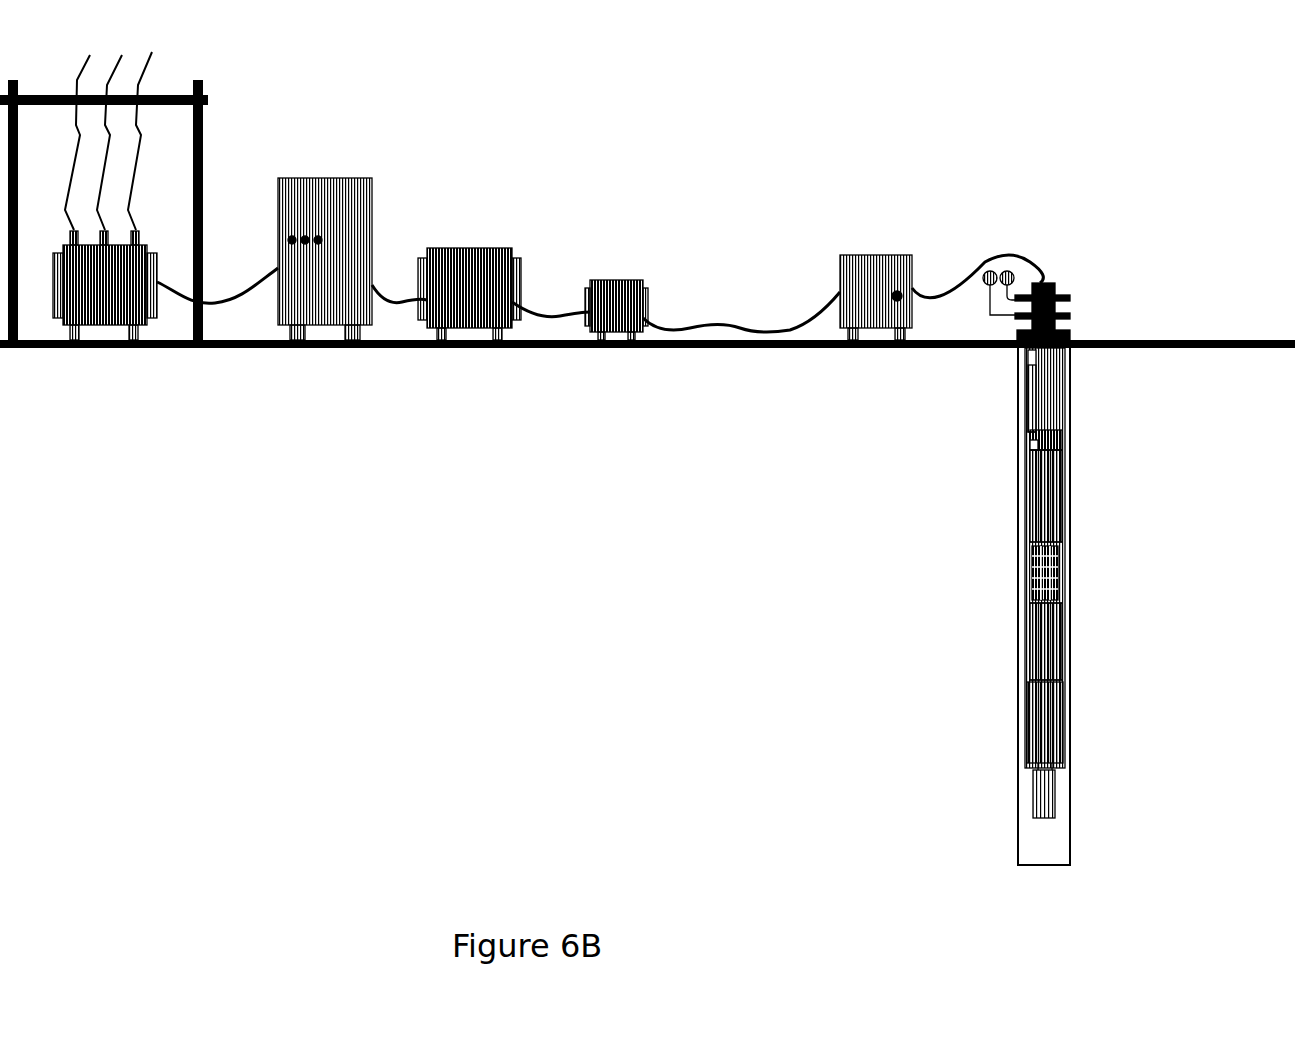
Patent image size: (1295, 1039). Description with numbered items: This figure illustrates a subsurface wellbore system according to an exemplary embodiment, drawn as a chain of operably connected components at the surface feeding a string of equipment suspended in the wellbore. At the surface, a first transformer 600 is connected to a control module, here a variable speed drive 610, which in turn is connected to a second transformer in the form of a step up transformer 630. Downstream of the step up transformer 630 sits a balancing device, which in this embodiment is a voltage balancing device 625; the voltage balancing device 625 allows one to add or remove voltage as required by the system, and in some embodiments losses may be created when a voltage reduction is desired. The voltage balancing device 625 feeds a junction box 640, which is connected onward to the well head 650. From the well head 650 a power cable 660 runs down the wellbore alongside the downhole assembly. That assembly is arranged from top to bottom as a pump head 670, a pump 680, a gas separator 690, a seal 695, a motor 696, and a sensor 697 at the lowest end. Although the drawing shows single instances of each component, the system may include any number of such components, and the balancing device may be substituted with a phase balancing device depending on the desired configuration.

The first transformer 600 is at (148, 208).
The variable speed drive 610 is at (372, 207).
The step up transformer 630 is at (427, 248).
The voltage balancing device 625 is at (614, 280).
The junction box 640 is at (895, 255).
The well head 650 is at (1060, 285).
The power cable 660 is at (1027, 404).
The pump head 670 is at (1070, 437).
The pump 680 is at (1070, 492).
The gas separator 690 is at (1070, 572).
The seal 695 is at (1070, 645).
The motor 696 is at (1027, 722).
The sensor 697 is at (1033, 799).